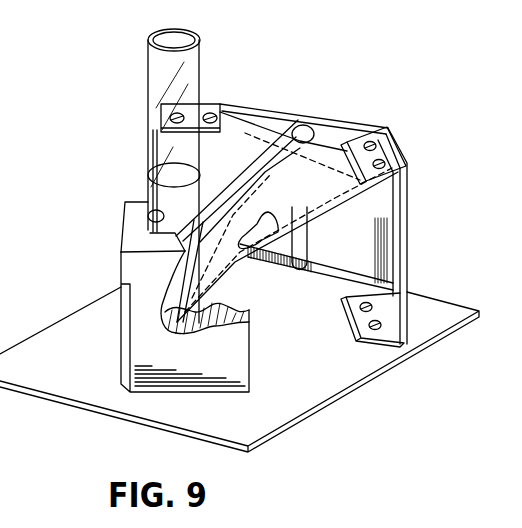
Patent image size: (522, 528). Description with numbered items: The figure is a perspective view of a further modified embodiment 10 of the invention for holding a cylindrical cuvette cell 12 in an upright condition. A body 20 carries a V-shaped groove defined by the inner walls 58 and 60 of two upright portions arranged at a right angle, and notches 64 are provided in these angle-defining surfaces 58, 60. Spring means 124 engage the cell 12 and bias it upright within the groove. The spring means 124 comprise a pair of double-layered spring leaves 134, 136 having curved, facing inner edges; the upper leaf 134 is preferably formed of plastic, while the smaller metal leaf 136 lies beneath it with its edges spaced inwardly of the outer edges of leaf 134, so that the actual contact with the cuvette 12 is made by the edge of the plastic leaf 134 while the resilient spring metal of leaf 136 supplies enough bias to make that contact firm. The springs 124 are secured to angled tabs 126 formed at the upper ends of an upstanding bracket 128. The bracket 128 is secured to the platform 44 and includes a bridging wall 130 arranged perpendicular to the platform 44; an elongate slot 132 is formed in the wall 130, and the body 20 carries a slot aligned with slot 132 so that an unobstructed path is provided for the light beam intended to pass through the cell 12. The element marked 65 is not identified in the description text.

The modified embodiment 10 is at (137, 66).
The cell 12 is at (241, 17).
The body 20 is at (309, 357).
The platform 44 is at (284, 416).
The inner wall 58 is at (304, 308).
The inner wall 60 is at (235, 143).
The notches 64 is at (152, 210).
The clamp block face 65 is at (142, 241).
The spring means 124 is at (352, 203).
The angled tabs 126 is at (165, 110).
The upstanding bracket 128 is at (238, 197).
The bridging wall 130 is at (284, 123).
The elongate slot 132 is at (304, 262).
The upper leaf 134 is at (336, 143).
The metal leaf 136 is at (294, 137).